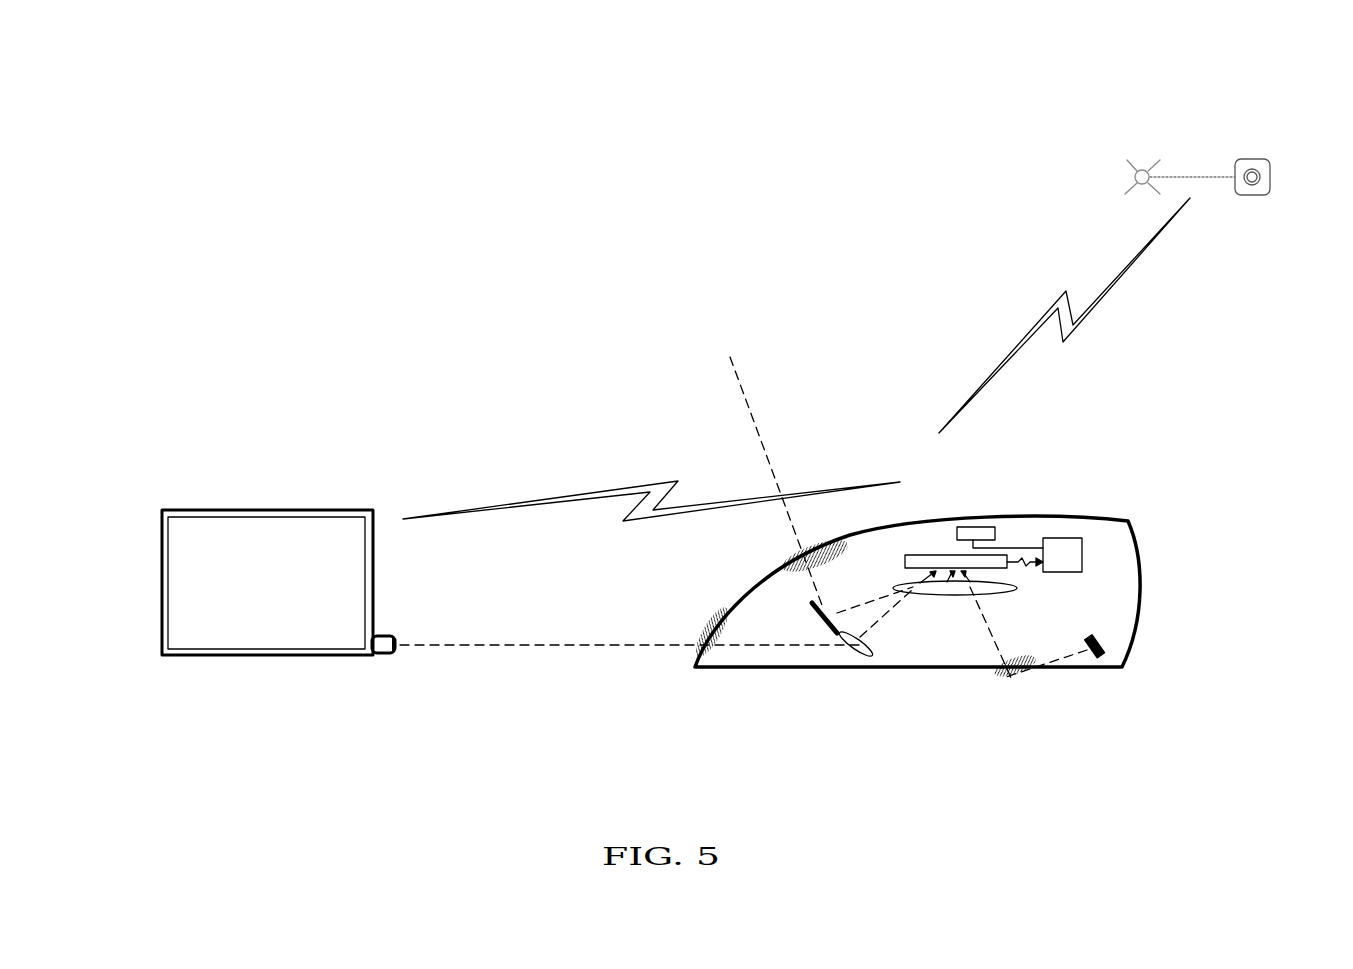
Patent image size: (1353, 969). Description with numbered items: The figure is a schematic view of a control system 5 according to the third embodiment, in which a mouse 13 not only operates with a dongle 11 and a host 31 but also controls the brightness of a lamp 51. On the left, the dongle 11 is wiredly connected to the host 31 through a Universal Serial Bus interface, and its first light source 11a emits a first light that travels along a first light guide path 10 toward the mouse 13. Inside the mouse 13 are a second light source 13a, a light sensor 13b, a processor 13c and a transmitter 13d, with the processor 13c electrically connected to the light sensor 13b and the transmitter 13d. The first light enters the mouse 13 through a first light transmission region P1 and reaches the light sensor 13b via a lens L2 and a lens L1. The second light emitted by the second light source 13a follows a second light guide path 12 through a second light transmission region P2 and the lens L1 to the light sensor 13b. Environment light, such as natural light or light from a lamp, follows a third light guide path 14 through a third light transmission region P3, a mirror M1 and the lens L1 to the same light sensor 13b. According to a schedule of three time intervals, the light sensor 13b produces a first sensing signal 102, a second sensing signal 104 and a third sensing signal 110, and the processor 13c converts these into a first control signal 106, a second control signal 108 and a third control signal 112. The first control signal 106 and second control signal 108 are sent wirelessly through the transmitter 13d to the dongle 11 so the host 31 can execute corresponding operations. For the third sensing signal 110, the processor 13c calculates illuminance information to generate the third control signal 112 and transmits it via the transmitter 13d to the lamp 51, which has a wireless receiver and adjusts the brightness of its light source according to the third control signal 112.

The control system 5 is at (770, 302).
The first light guide path 10 is at (1070, 656).
The dongle 11 is at (381, 635).
The first light source 11a is at (400, 648).
The second light guide path 12 is at (625, 648).
The mouse 13 is at (1012, 539).
The second light source 13a is at (1103, 642).
The light sensor 13b is at (950, 555).
The processor 13c is at (1082, 562).
The transmitter 13d is at (982, 527).
The third light guide path 14 is at (780, 472).
The host 31 is at (198, 510).
The lamp 51 is at (1252, 158).
The first sensing signal 102 is at (1049, 602).
The second sensing signal 104 is at (1049, 602).
The first control signal 106 is at (651, 481).
The second control signal 108 is at (567, 492).
The third sensing signal 110 is at (1026, 565).
The third control signal 112 is at (1027, 333).
The lens L1 is at (947, 597).
The lens L2 is at (860, 656).
The mirror M1 is at (820, 617).
The first light transmission region P1 is at (1000, 676).
The second light transmission region P2 is at (706, 627).
The third light transmission region P3 is at (826, 545).